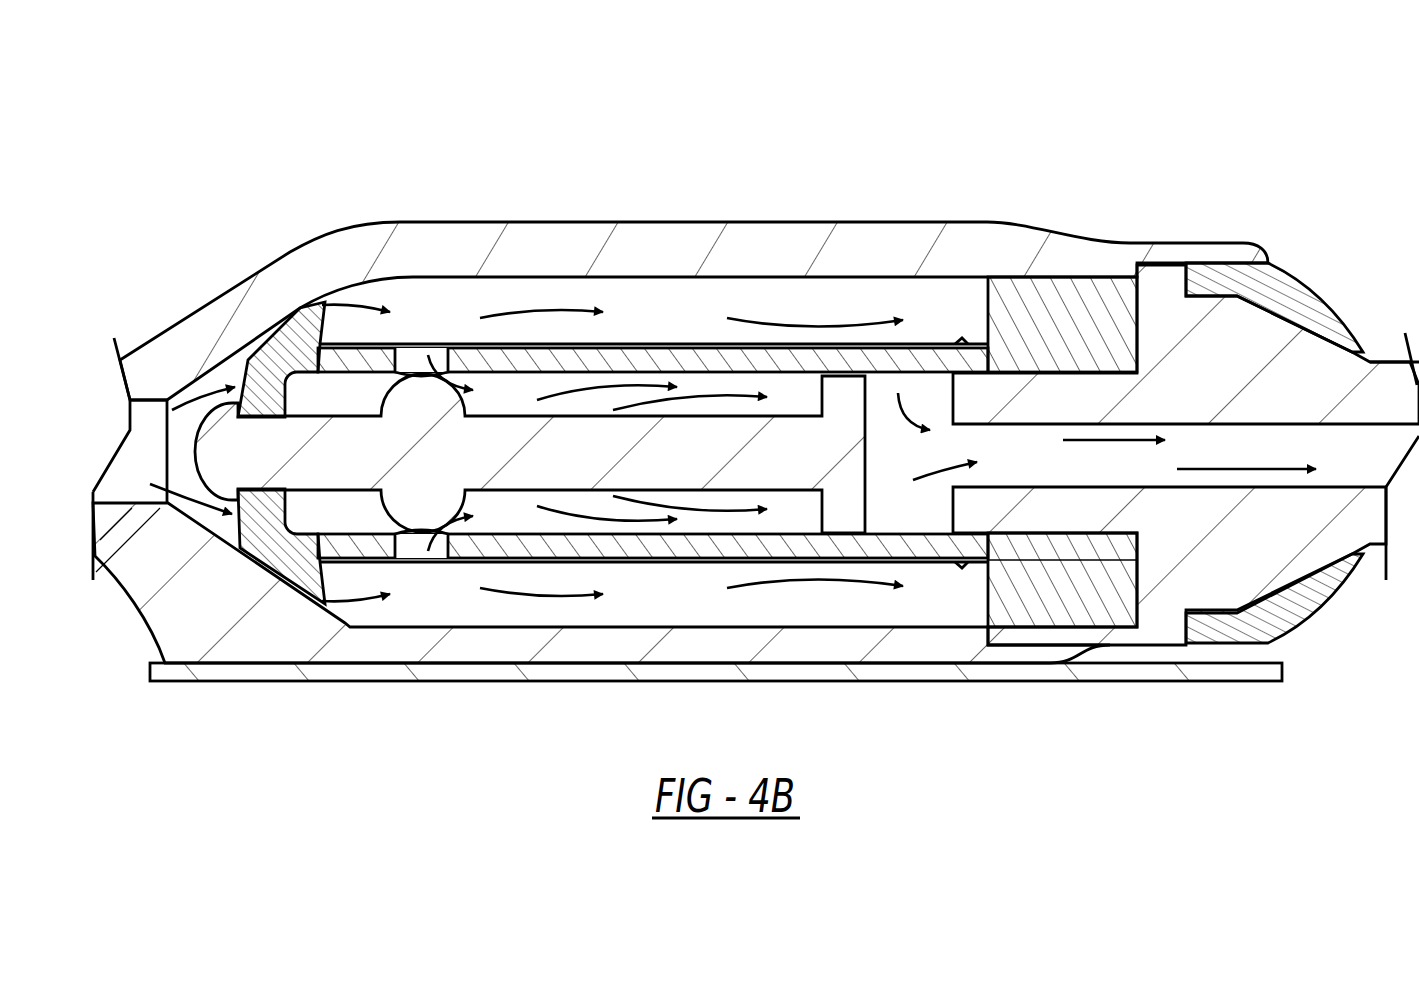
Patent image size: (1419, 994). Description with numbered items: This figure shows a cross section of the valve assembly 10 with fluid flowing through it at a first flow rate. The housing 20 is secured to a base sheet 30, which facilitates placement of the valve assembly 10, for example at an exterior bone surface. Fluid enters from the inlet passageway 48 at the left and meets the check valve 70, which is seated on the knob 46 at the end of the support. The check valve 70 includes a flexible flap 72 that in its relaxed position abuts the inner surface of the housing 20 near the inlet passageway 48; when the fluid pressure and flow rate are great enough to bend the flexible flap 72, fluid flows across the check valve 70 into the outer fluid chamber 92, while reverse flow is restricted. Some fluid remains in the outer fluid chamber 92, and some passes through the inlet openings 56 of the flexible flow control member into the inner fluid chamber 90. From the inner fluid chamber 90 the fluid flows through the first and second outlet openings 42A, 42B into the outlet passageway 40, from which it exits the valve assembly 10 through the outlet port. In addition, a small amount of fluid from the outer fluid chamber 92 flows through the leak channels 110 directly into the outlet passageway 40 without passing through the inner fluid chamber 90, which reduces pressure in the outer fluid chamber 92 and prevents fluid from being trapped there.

The valve assembly 10 is at (562, 116).
The housing 20 is at (673, 222).
The base sheet 30 is at (1120, 668).
The outlet passageway 40 is at (1338, 424).
The first outlet opening 42A is at (932, 392).
The second outlet opening 42B is at (897, 496).
The knob 46 is at (233, 487).
The inlet passageway 48 is at (123, 483).
The inlet openings 56 is at (417, 353).
The check valve 70 is at (270, 385).
The flexible flap 72 is at (305, 327).
The inner fluid chamber 90 is at (488, 400).
The outer fluid chamber 92 is at (687, 322).
The leak channels 110 is at (987, 362).